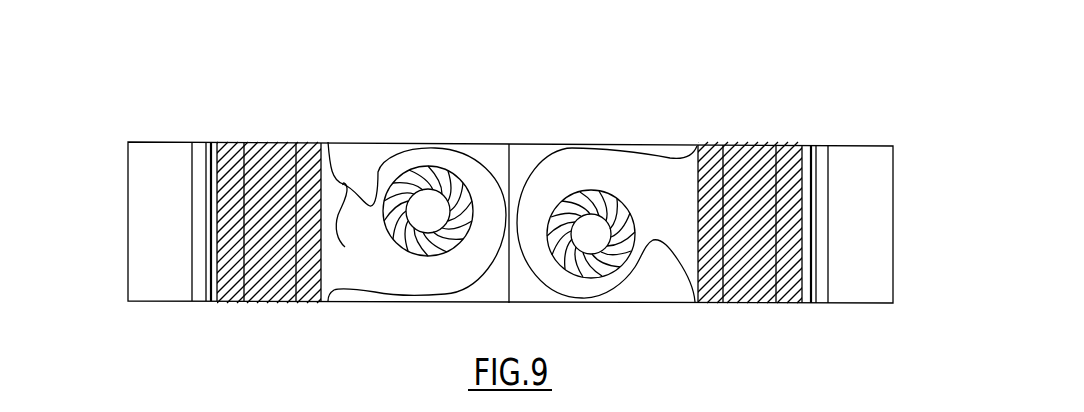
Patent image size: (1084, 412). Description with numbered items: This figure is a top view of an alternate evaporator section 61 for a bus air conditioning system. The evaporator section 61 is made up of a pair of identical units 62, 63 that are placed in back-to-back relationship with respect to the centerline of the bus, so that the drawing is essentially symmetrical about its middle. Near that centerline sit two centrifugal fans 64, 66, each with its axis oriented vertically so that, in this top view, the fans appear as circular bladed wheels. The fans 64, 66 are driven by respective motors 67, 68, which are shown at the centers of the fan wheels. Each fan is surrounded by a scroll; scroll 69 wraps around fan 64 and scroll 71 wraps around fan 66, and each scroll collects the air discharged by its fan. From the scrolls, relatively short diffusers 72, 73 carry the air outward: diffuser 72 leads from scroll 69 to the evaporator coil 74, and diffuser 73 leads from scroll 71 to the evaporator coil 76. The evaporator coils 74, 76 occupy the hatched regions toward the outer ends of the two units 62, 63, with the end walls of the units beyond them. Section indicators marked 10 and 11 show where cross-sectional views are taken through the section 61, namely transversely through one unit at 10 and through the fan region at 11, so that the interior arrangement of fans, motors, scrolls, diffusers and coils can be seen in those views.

The section line 10- 10 is at (101, 212).
The section line 11- 11 is at (433, 104).
The alternate evaporator section 61 is at (690, 130).
The unit 62 is at (823, 146).
The unit 63 is at (197, 142).
The centrifugal fan 64 is at (590, 203).
The centrifugal fan 66 is at (405, 180).
The motor 67 is at (597, 227).
The motor 68 is at (435, 202).
The scroll 69 is at (568, 151).
The scroll 71 is at (459, 151).
The diffuser 72 is at (683, 262).
The diffuser 73 is at (356, 222).
The evaporator coil 74 is at (752, 160).
The evaporator coil 76 is at (276, 142).